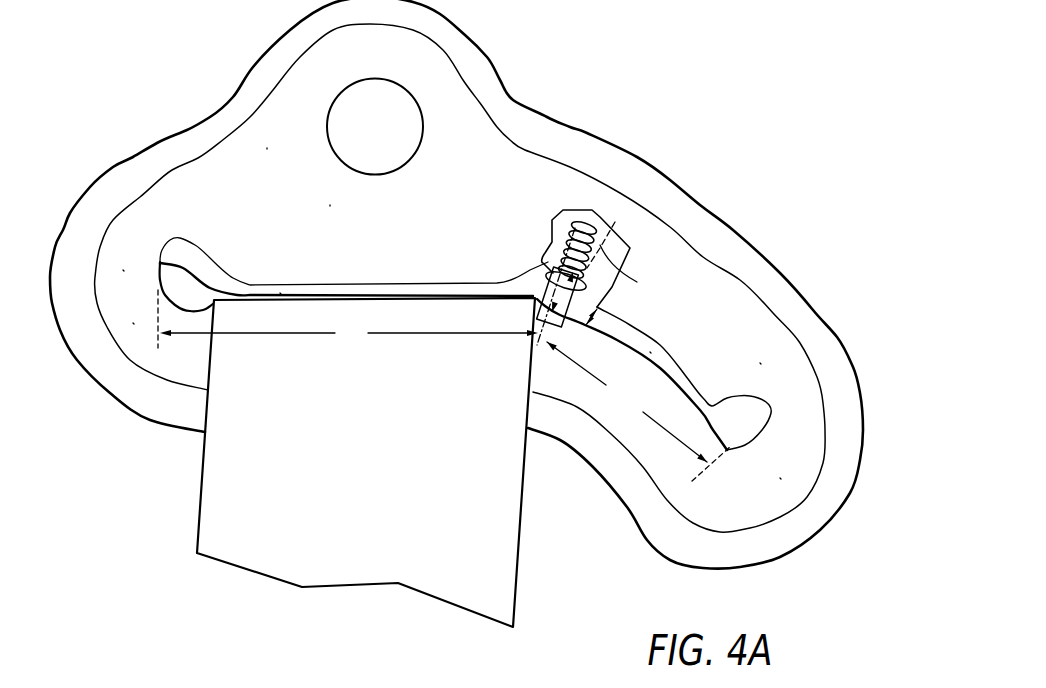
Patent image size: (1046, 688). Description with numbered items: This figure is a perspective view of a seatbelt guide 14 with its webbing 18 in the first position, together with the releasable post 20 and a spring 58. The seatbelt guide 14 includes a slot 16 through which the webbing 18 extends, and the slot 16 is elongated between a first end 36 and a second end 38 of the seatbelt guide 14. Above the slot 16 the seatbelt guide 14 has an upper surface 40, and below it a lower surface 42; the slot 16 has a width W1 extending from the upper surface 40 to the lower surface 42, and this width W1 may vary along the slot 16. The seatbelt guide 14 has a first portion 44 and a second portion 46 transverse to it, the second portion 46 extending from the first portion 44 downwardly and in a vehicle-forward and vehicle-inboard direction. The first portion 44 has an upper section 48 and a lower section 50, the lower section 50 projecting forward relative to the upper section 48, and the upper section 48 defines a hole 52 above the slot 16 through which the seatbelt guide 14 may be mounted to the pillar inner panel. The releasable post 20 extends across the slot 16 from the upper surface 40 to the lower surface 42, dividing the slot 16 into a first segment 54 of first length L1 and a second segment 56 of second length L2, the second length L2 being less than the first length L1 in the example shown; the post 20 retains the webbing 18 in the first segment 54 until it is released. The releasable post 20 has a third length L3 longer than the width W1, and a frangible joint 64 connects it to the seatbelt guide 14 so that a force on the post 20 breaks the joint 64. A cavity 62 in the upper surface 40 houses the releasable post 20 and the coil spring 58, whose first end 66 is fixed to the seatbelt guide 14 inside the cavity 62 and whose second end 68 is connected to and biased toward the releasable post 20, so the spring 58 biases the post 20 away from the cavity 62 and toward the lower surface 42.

The seatbelt guide 14 is at (705, 97).
The slot 16 is at (187, 288).
The webbing 18 is at (230, 507).
The releasable post 20 is at (615, 297).
The first end 36 is at (133, 323).
The second end 38 is at (780, 478).
The upper surface 40 is at (280, 293).
The lower surface 42 is at (200, 305).
The first portion 44 is at (330, 205).
The second portion 46 is at (760, 363).
The upper section 48 is at (267, 148).
The lower section 50 is at (123, 272).
The hole 52 is at (393, 123).
The first segment 54 is at (405, 283).
The second segment 56 is at (650, 352).
The spring 58 is at (600, 233).
The cavity 62 is at (615, 222).
The joint 64 is at (553, 270).
The first end 66 is at (590, 220).
The second end 68 is at (551, 238).
The first length L1 is at (366, 288).
The second length L2 is at (639, 411).
The third length L3 is at (565, 272).
The width W1 is at (603, 311).